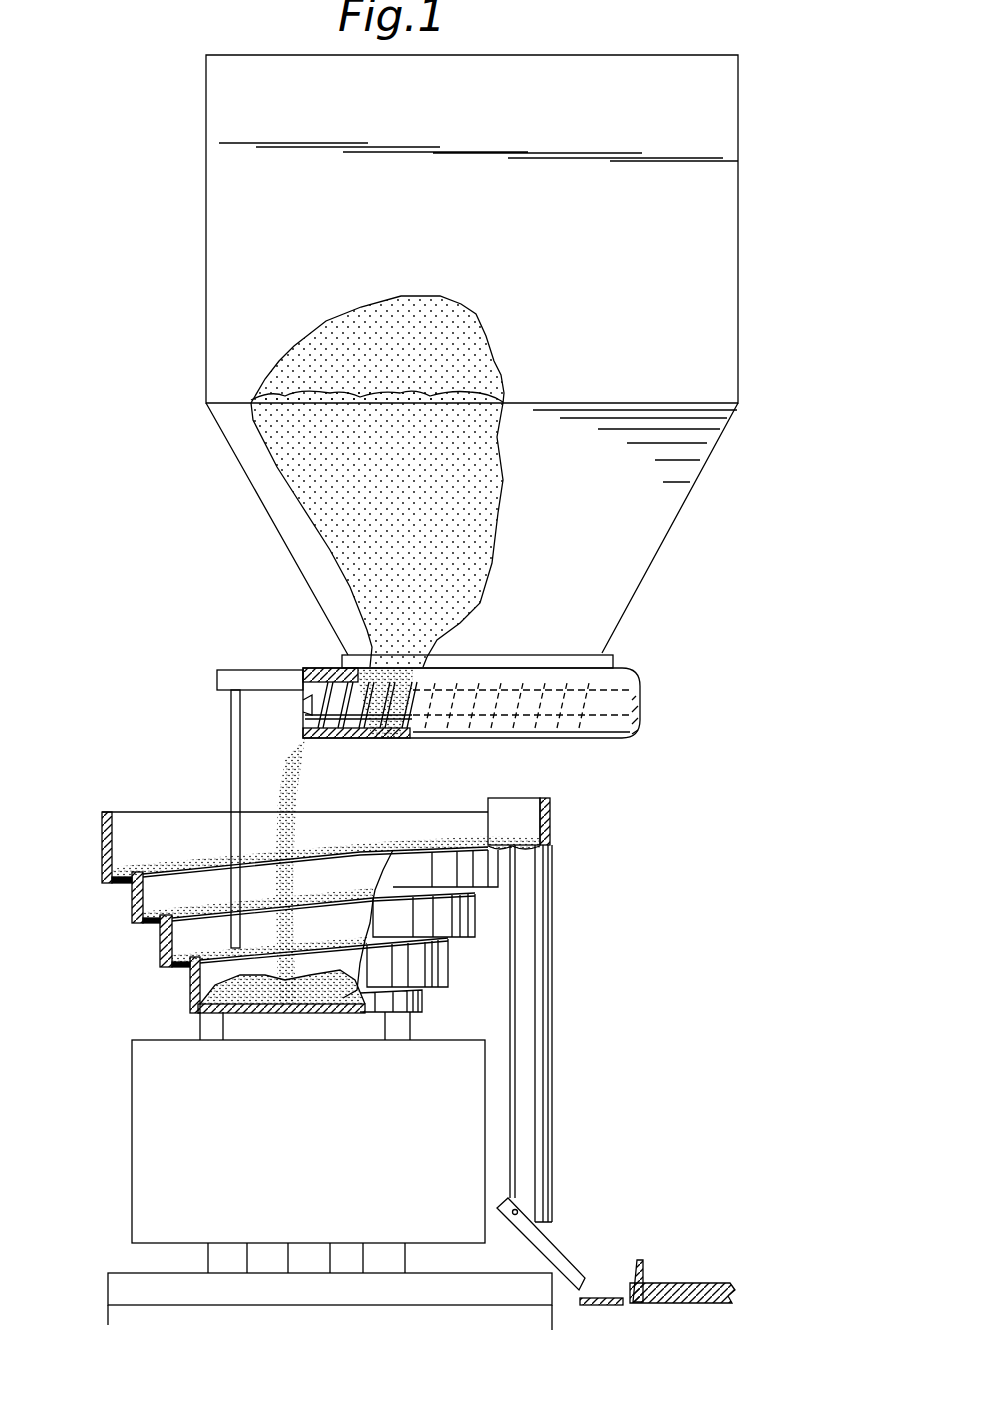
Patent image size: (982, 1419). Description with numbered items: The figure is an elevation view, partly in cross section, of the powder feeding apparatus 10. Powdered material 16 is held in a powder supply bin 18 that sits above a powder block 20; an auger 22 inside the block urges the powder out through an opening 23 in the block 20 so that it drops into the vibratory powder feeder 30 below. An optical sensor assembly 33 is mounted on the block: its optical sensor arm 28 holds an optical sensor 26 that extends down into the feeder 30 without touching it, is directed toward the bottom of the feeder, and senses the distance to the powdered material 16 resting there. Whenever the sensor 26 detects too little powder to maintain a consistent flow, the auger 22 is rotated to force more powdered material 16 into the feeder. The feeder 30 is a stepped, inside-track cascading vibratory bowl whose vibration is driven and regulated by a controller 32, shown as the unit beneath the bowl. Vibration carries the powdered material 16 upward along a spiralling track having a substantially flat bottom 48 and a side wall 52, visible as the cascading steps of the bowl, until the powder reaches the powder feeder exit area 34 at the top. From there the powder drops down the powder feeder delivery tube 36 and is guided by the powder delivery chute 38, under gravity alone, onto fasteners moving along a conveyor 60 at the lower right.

The apparatus 10 is at (106, 733).
The powdered material 16 is at (415, 521).
The powder supply bin 18 is at (638, 314).
The powder block 20 is at (598, 738).
The auger 22 is at (400, 728).
The opening 23 is at (303, 705).
The optical sensor 26 is at (230, 730).
The optical sensor arm 28 is at (255, 672).
The vibratory powder feeder 30 is at (475, 912).
The controller 32 is at (314, 1108).
The optical sensor assembly 33 is at (208, 634).
The powder feeder exit area 34 is at (581, 814).
The powder feeder delivery tube 36 is at (555, 1093).
The powder delivery chute 38 is at (557, 1242).
The substantially flat bottom 48 is at (120, 887).
The side wall 52 is at (132, 907).
The conveyor 60 is at (605, 1307).